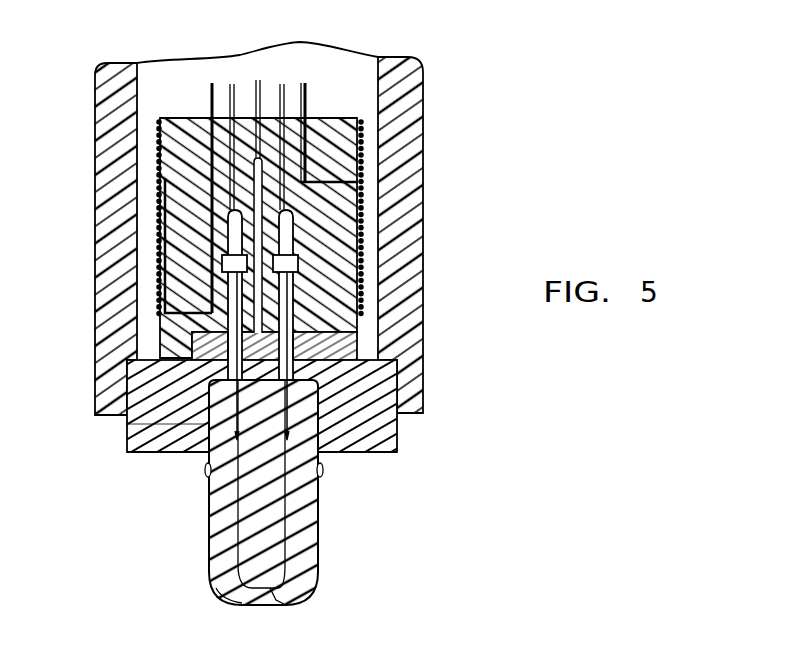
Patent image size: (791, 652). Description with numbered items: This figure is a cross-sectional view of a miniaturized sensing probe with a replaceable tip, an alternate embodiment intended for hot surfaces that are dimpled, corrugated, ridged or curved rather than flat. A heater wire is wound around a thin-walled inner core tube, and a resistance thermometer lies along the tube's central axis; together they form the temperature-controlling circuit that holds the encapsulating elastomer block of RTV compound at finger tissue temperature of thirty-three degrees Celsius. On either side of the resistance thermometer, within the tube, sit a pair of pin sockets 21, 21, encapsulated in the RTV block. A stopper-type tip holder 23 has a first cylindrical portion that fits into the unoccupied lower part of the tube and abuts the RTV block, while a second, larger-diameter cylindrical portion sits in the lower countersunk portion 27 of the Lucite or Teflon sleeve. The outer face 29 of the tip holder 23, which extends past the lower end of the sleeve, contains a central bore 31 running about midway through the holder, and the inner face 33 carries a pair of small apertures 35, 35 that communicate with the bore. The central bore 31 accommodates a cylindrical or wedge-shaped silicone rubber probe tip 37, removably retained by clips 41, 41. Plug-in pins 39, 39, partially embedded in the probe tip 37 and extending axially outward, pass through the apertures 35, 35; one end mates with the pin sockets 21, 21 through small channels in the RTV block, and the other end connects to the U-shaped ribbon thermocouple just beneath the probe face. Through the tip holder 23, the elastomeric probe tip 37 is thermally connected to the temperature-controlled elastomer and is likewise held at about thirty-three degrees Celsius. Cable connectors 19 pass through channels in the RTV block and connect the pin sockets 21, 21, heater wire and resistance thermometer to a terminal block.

The cable connectors 19 is at (317, 73).
The pin sockets 21 is at (157, 268).
The plug-in pins 39 is at (300, 294).
The small apertures 35 is at (228, 335).
The inner face of the tip holder 33 is at (345, 333).
The lower countersunk portion 27 is at (97, 352).
The central bore 31 is at (207, 424).
The outer face of the tip holder 29 is at (148, 453).
The tip holder 23 is at (197, 453).
The clips 41 is at (209, 476).
The probe tip 37 is at (318, 557).